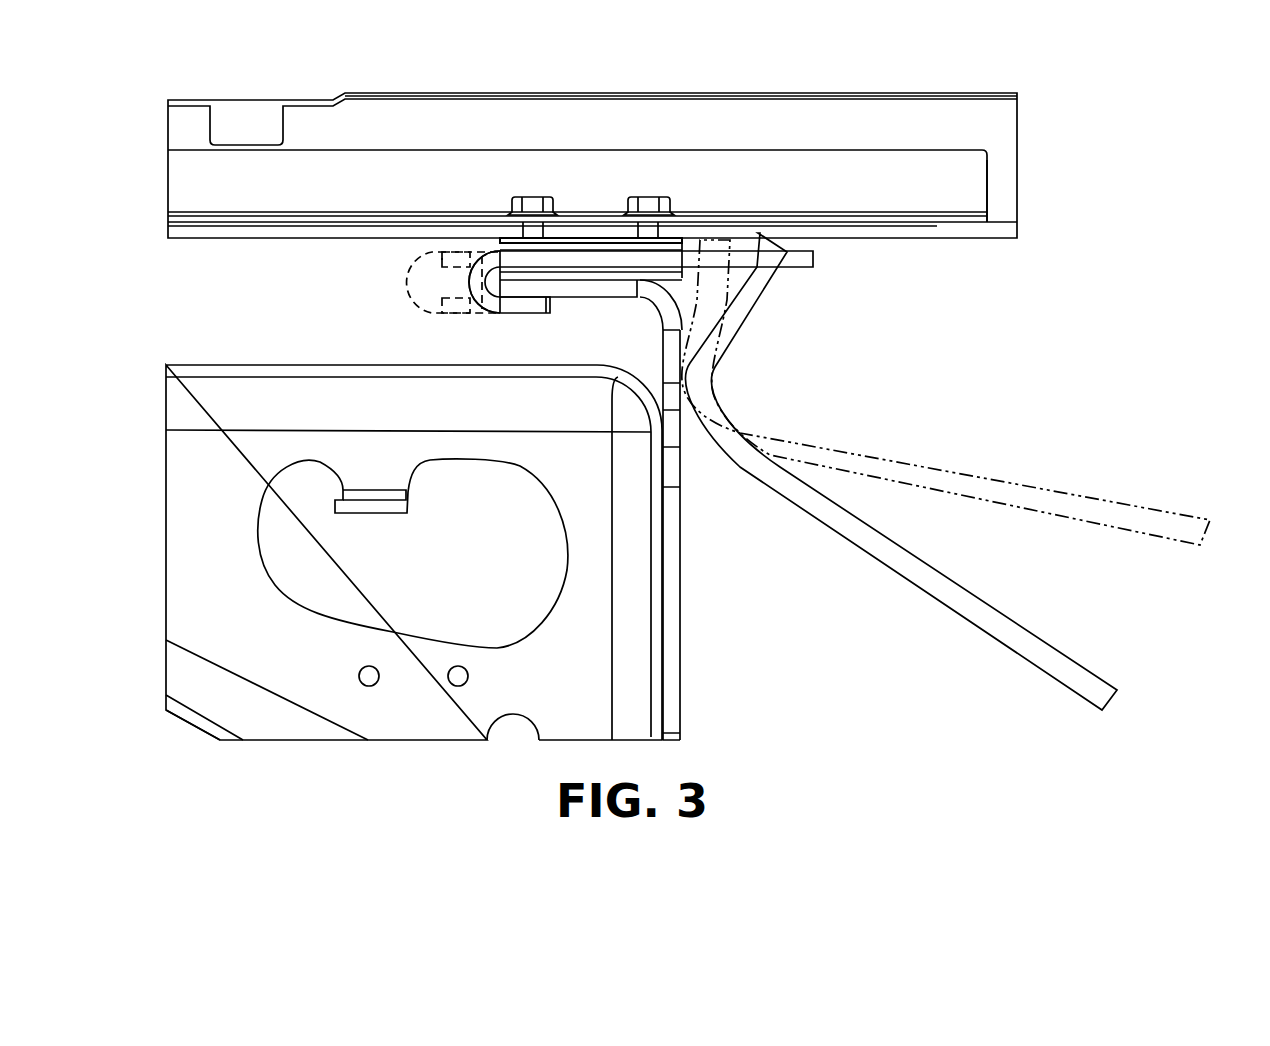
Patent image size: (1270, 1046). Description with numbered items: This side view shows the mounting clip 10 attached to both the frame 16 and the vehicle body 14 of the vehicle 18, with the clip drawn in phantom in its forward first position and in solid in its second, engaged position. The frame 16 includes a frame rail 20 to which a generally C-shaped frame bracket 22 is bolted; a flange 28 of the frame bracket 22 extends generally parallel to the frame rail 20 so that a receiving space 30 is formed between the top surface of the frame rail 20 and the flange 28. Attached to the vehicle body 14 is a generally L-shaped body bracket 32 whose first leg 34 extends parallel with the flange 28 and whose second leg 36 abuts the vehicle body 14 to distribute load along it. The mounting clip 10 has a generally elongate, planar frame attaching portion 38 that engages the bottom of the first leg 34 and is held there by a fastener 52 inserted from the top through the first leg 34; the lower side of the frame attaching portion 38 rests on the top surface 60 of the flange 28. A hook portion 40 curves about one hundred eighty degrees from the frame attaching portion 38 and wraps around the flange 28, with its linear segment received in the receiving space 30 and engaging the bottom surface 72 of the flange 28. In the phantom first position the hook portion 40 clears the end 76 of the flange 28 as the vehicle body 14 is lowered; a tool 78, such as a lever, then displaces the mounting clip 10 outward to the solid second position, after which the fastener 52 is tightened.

The mounting clip 10 is at (813, 257).
The vehicle body 14 is at (783, 93).
The frame 16 is at (382, 742).
The vehicle 18 is at (1110, 228).
The frame rail 20 is at (262, 742).
The frame bracket 22 is at (673, 711).
The flange 28 is at (617, 293).
The receiving space 30 is at (558, 350).
The body bracket 32 is at (902, 180).
The first leg 34 is at (937, 226).
The second leg 36 is at (982, 182).
The frame attaching portion 38 is at (742, 257).
The hook portion 40 is at (483, 288).
The fastener 52 is at (533, 200).
The top surface 60 is at (683, 283).
The bottom surface 72 is at (572, 298).
The end 76 is at (470, 297).
The tool 78 is at (977, 478).